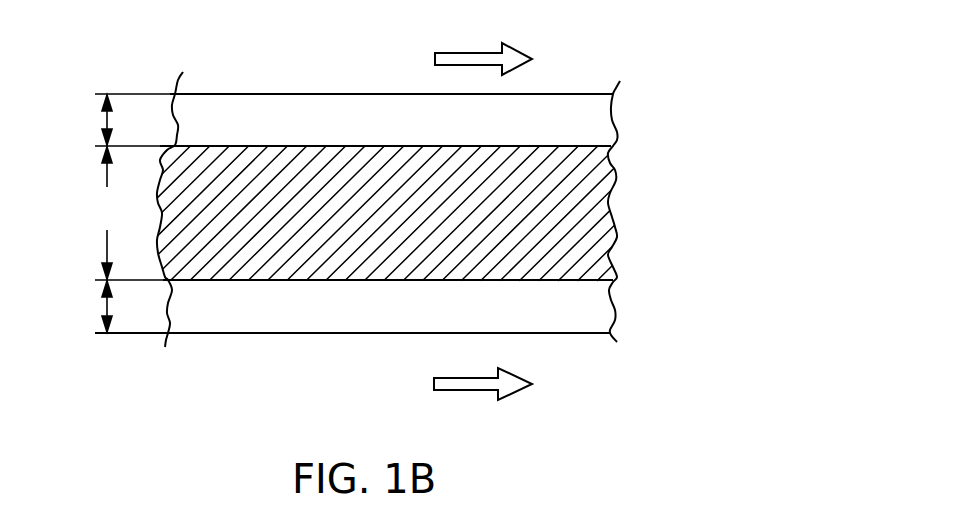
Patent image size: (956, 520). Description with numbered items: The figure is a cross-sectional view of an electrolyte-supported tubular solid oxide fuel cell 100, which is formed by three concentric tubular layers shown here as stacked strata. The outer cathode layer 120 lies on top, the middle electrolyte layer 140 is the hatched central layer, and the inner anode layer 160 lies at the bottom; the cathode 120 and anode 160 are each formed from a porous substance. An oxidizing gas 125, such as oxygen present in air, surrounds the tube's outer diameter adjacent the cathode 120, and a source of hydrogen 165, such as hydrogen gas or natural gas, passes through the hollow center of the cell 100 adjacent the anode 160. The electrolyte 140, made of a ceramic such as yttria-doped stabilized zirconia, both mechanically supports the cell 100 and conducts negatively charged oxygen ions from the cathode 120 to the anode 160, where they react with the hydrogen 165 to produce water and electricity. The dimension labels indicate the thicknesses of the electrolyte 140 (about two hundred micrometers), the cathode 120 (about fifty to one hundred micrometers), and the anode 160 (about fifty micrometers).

The electrolyte-supported tubular solid oxide fuel cell 100 is at (231, 80).
The cathode layer 120 is at (567, 140).
The oxidizing gas 125 is at (407, 42).
The electrolyte layer 140 is at (567, 226).
The anode layer 160 is at (567, 320).
The source of hydrogen 165 is at (375, 424).